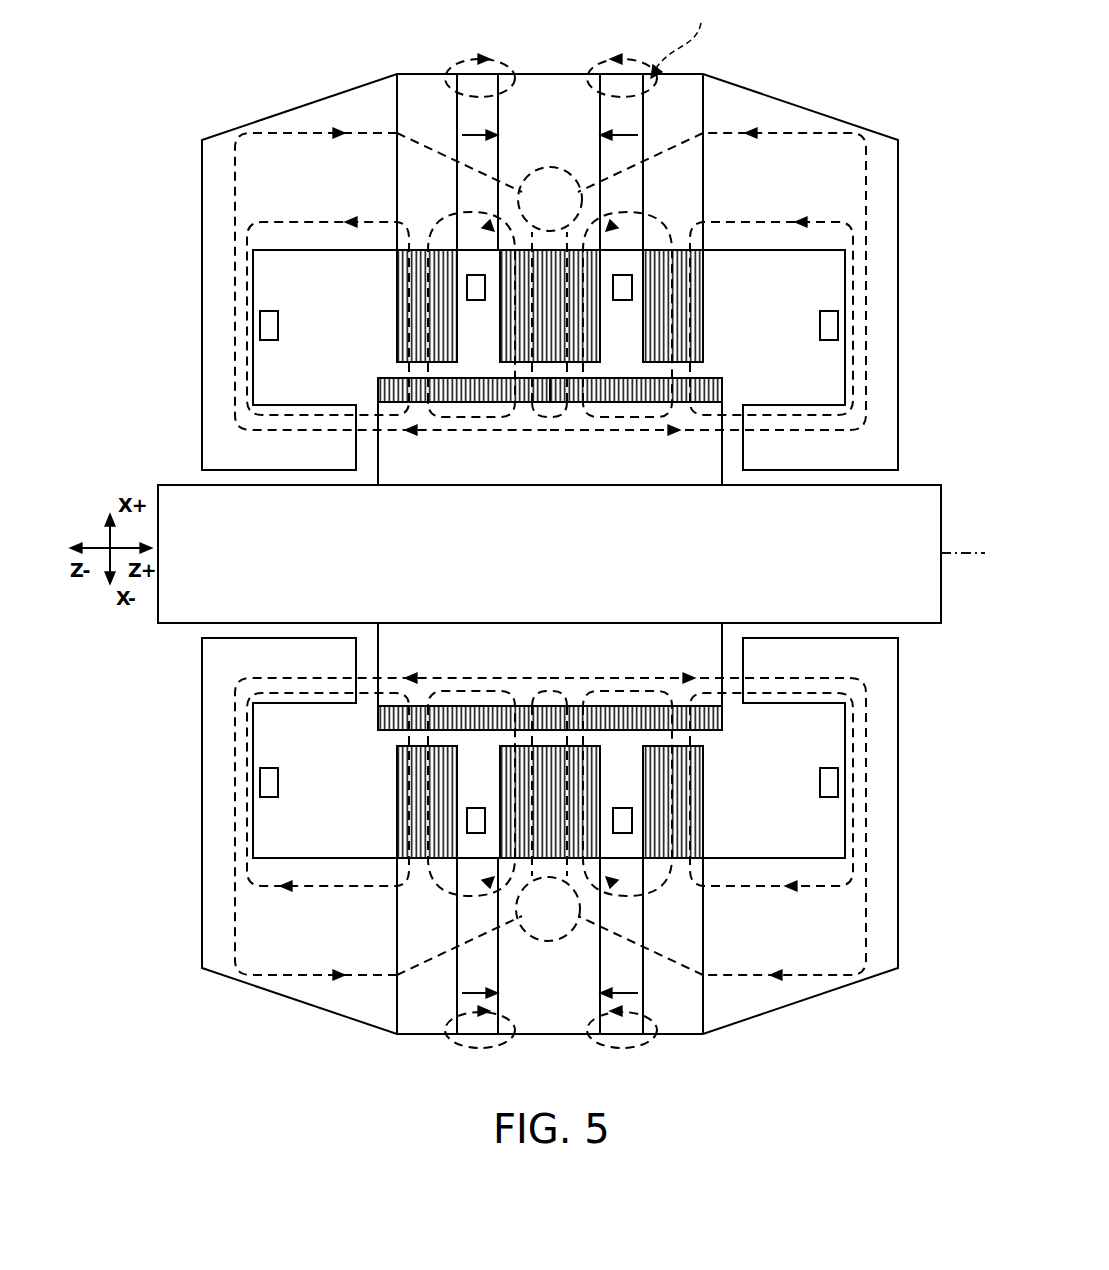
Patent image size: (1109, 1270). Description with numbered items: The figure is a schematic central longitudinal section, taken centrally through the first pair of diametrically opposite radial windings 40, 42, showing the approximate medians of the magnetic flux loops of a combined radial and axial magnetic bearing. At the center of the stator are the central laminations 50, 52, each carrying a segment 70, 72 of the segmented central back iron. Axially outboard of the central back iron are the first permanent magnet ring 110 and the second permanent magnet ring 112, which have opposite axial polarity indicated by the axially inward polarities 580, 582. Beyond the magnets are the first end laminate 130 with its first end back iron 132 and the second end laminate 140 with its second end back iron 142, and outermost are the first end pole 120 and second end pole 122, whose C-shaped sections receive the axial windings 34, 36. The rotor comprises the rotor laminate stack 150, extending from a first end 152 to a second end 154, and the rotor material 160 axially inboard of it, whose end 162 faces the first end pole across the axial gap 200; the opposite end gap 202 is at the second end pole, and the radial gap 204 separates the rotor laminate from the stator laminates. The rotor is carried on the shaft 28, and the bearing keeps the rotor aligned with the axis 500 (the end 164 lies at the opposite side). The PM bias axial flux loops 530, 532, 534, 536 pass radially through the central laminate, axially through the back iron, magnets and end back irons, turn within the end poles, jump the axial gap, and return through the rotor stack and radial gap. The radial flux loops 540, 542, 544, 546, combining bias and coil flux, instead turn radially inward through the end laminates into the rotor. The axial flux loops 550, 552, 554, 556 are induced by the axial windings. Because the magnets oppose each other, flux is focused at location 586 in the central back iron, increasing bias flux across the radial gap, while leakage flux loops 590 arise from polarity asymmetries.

The base 28 is at (902, 497).
The axial winding 34 is at (820, 328).
The axial winding 36 is at (278, 325).
The radial winding 40 is at (476, 300).
The radial winding 42 is at (480, 808).
The central laminate 50 is at (604, 343).
The lamination 52 is at (604, 771).
The central back iron segment 70 is at (548, 72).
The central back iron segment 72 is at (555, 1020).
The first permanent magnet ring 110 is at (620, 88).
The second permanent magnet ring 112 is at (478, 88).
The first end pole 120 is at (890, 280).
The second end pole 122 is at (210, 190).
The first end laminate 130 is at (706, 279).
The first end back iron 132 is at (683, 95).
The second end laminate 140 is at (397, 272).
The second end back iron 142 is at (418, 95).
The rotor laminate stack 150 is at (722, 727).
The first end of rotor laminate stack 152 is at (722, 719).
The second end of rotor laminate stack 154 is at (378, 718).
The rotor material 160 is at (690, 640).
The end of rotor material 162 is at (722, 462).
The mover block left side 164 is at (377, 462).
The axial gap 200 is at (733, 400).
The opposite end gap 202 is at (367, 400).
The radial gap 204 is at (602, 376).
The axis 500 is at (954, 553).
The first PM bias axial flux loop 530 is at (862, 135).
The second PM bias axial flux loop 532 is at (238, 140).
The third PM bias axial flux loop 534 is at (862, 695).
The fourth PM bias axial flux loop 536 is at (232, 740).
The first radial flux loop 540 is at (700, 370).
The second radial flux loop 542 is at (427, 374).
The third radial flux loop 544 is at (695, 870).
The fourth radial flux loop 546 is at (407, 870).
The first axial flux loop 550 is at (775, 222).
The second axial flux loop 552 is at (328, 222).
The third axial flux loop 554 is at (730, 887).
The fourth axial flux loop 556 is at (372, 888).
The axially inward polarity 580 is at (617, 147).
The axially inward polarity 582 is at (485, 141).
The flux concentration location 586 is at (572, 178).
The leakage flux loops 590 is at (688, 39).